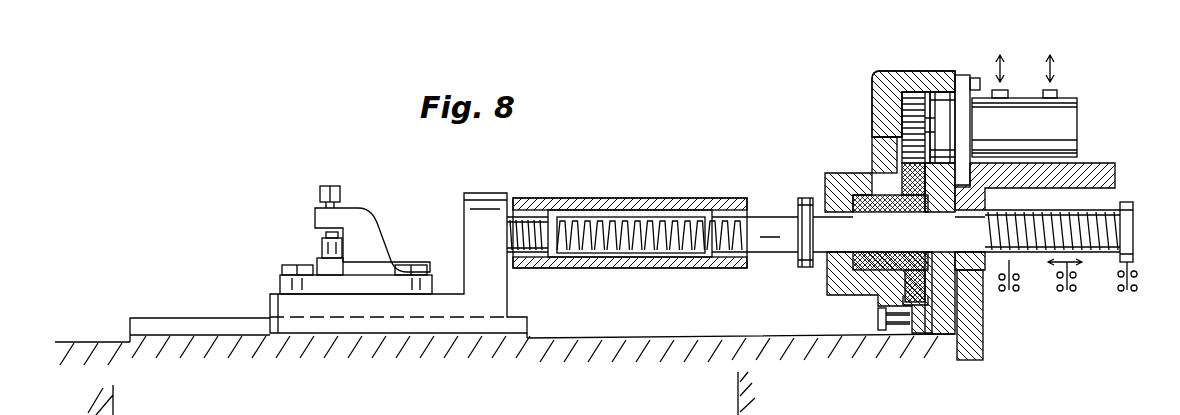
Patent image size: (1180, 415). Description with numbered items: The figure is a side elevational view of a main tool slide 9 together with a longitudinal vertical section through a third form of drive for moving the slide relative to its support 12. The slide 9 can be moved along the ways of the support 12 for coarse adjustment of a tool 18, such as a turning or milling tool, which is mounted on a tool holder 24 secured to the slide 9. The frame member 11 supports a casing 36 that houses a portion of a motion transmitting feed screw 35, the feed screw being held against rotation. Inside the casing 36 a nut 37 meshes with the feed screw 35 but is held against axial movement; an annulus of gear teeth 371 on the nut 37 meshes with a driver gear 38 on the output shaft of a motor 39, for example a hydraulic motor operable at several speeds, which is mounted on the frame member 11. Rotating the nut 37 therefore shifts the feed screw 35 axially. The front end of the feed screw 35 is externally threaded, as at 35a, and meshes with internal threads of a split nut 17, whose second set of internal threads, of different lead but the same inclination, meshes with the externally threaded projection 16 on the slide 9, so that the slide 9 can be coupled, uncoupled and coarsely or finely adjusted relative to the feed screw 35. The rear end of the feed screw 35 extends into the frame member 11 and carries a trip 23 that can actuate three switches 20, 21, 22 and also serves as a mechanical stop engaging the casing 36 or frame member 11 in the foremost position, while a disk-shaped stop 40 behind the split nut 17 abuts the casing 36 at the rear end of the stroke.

The main tool slide 9 is at (354, 308).
The frame member 11 is at (740, 410).
The support 12 is at (572, 340).
The projection 16 is at (522, 228).
The split nut 17 is at (676, 200).
The tool 18 is at (325, 250).
The switch 20 is at (1009, 292).
The switch 21 is at (1067, 292).
The switch 22 is at (1127, 292).
The trip 23 is at (1128, 202).
The tool holder 24 is at (362, 238).
The feed screw 35 is at (1080, 218).
The external threads of the feed screw 35a is at (643, 217).
The casing 36 is at (863, 287).
The nut 37 is at (870, 202).
The driver gear 38 is at (914, 107).
The motor 39 is at (1066, 113).
The disk-shaped stop 40 is at (806, 200).
The annulus of gear teeth 371 is at (918, 302).